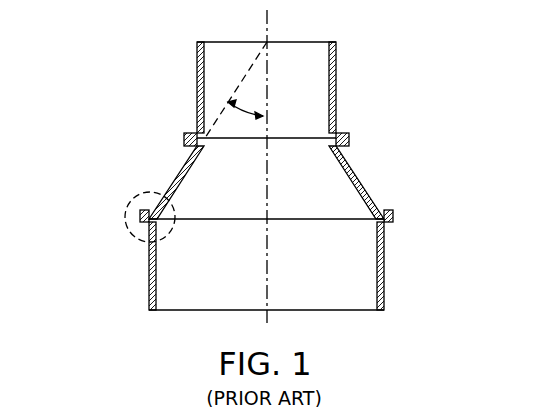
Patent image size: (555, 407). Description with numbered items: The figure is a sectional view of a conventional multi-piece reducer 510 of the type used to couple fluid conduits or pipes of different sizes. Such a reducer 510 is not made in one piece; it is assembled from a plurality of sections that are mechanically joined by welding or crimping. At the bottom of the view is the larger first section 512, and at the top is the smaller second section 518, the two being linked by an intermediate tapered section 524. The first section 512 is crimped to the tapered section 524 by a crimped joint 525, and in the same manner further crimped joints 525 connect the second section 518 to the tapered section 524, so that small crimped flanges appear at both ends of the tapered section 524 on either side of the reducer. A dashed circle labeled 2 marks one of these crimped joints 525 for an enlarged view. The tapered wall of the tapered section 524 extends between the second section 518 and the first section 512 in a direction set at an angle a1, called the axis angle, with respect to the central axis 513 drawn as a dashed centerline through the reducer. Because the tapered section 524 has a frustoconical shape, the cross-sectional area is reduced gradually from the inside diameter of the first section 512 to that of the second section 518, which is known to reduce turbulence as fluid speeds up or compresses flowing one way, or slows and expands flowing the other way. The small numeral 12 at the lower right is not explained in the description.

The conventional reducer 510 is at (285, 164).
The second section 518 is at (347, 55).
The first section 512 is at (388, 270).
The tapered section 524 is at (360, 178).
The crimped joint 525 is at (180, 137).
The central axis 513 is at (267, 288).
The axis angle a1 is at (245, 114).
The detail region shown in FIG. 2 is at (132, 207).
The reference numeral 12 is at (465, 406).